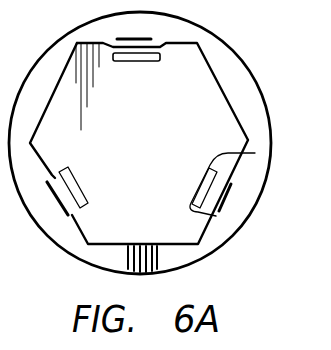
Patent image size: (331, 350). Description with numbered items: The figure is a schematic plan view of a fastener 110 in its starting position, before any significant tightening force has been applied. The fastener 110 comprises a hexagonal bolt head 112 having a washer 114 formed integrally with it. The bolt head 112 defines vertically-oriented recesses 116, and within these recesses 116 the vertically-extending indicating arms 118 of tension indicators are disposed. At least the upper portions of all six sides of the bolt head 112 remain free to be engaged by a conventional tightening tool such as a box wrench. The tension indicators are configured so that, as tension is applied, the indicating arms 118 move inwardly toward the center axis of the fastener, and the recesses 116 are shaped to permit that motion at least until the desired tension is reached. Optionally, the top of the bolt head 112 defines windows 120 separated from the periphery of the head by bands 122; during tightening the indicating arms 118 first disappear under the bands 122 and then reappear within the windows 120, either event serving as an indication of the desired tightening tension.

The fastener 110 is at (280, 123).
The bolt head 112 is at (155, 118).
The washer 114 is at (217, 250).
The recesses 116 is at (72, 215).
The indicating arms 118 is at (222, 199).
The windows 120 is at (255, 153).
The bands 122 is at (68, 193).